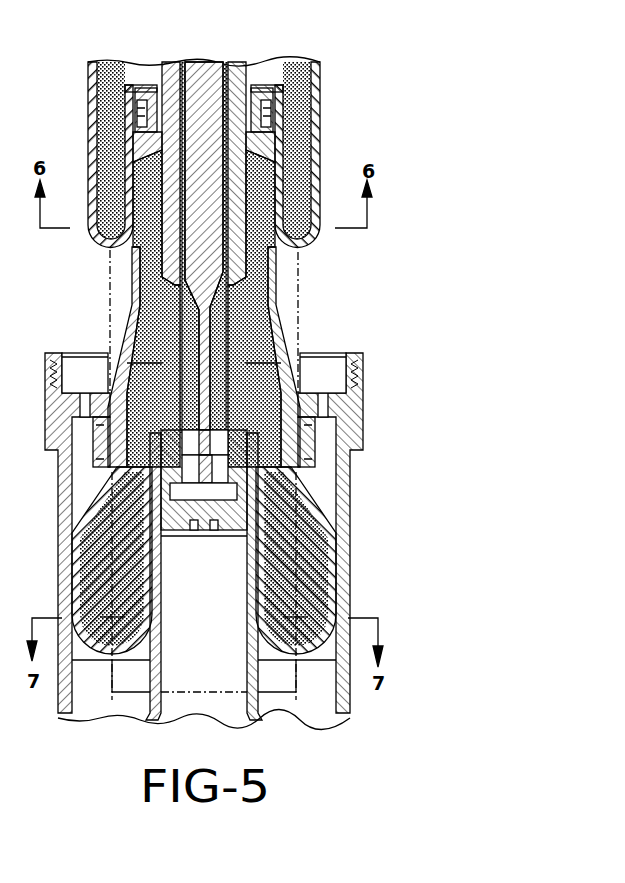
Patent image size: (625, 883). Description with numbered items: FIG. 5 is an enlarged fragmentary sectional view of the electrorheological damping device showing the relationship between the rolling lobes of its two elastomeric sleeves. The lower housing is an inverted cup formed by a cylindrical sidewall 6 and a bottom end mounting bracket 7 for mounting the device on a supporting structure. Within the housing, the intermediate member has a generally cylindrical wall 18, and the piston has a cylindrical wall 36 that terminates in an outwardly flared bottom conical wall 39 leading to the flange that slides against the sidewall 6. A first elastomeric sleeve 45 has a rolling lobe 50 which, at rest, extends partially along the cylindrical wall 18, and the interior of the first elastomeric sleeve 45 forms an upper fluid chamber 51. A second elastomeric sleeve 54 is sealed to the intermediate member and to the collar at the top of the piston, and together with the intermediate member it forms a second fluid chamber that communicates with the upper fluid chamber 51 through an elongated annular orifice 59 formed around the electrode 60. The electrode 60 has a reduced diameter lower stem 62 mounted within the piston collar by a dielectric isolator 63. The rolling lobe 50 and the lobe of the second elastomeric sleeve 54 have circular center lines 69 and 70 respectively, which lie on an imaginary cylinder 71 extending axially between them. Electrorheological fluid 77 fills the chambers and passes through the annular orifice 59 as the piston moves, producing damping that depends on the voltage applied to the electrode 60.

The cylindrical sidewall 6 is at (343, 558).
The bottom end mounting bracket 7 is at (168, 441).
The cylindrical wall 18 is at (135, 290).
The cylindrical wall 36 is at (250, 605).
The bottom conical wall 39 is at (262, 713).
The first elastomeric sleeve 45 is at (315, 70).
The rolling lobe 50 is at (308, 246).
The upper fluid chamber 51 is at (113, 78).
The second elastomeric sleeve 54 is at (96, 655).
The annular orifice 59 is at (232, 134).
The electrode 60 is at (200, 58).
The lower stem 62 is at (208, 355).
The dielectric isolator 63 is at (235, 522).
The circular center line 69 is at (100, 242).
The circular center line 70 is at (107, 617).
The imaginary cylinder 71 is at (110, 322).
The fluid 77 is at (97, 553).